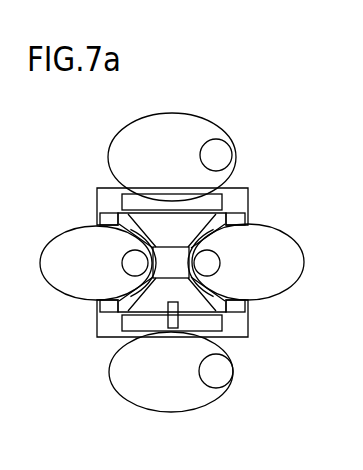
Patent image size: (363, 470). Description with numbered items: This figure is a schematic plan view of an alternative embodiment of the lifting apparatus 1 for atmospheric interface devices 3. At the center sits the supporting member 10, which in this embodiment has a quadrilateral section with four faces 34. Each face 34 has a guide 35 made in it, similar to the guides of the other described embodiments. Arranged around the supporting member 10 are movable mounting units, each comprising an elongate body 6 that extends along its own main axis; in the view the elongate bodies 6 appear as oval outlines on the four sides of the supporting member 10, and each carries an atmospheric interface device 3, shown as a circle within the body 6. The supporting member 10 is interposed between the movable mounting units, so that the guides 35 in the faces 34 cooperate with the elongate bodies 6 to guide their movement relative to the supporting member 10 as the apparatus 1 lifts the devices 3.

The lifting apparatus 1 is at (282, 212).
The atmospheric interface device 3 is at (212, 147).
The elongate body 6 is at (160, 163).
The supporting member 10 is at (77, 213).
The face 34 is at (252, 203).
The guide 35 is at (98, 223).